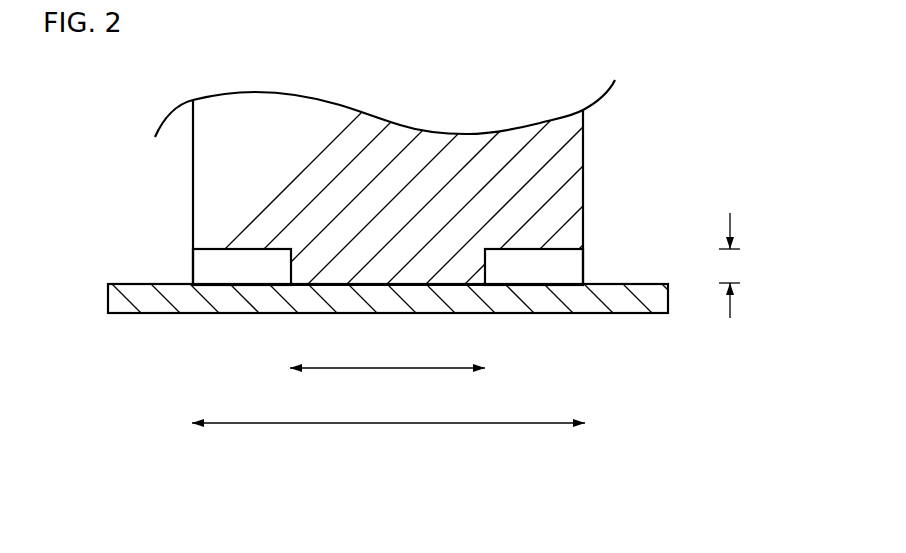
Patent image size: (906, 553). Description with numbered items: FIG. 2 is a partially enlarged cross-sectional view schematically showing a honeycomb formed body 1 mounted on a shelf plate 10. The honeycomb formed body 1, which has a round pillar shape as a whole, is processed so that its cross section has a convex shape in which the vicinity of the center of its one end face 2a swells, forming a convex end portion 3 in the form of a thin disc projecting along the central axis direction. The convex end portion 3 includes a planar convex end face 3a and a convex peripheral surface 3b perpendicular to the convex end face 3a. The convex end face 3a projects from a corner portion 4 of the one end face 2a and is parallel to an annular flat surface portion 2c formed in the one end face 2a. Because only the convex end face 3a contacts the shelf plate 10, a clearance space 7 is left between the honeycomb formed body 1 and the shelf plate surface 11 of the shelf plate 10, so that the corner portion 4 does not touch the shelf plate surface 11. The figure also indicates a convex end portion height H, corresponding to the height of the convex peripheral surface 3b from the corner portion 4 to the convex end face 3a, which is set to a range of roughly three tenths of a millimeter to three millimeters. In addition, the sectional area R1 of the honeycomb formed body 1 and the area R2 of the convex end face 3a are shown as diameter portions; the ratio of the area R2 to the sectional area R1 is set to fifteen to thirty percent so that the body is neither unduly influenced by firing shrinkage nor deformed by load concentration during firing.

The honeycomb formed body 1 is at (371, 270).
The convex end portion 3 is at (371, 285).
The convex end face 3a is at (388, 319).
The one end face 2a is at (392, 283).
The convex peripheral surface 3b is at (290, 268).
The annular flat surface portion 2c is at (513, 250).
The corner portion 4 is at (583, 248).
The clearance space 7 is at (196, 271).
The shelf plate 10 is at (396, 293).
The shelf plate surface 11 is at (118, 283).
The convex end portion height H is at (738, 263).
The sectional area R1 is at (400, 424).
The area R2 is at (375, 369).